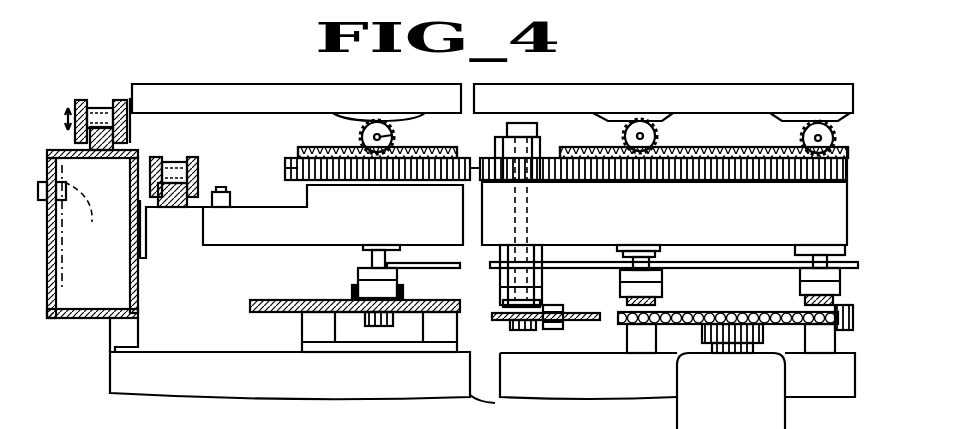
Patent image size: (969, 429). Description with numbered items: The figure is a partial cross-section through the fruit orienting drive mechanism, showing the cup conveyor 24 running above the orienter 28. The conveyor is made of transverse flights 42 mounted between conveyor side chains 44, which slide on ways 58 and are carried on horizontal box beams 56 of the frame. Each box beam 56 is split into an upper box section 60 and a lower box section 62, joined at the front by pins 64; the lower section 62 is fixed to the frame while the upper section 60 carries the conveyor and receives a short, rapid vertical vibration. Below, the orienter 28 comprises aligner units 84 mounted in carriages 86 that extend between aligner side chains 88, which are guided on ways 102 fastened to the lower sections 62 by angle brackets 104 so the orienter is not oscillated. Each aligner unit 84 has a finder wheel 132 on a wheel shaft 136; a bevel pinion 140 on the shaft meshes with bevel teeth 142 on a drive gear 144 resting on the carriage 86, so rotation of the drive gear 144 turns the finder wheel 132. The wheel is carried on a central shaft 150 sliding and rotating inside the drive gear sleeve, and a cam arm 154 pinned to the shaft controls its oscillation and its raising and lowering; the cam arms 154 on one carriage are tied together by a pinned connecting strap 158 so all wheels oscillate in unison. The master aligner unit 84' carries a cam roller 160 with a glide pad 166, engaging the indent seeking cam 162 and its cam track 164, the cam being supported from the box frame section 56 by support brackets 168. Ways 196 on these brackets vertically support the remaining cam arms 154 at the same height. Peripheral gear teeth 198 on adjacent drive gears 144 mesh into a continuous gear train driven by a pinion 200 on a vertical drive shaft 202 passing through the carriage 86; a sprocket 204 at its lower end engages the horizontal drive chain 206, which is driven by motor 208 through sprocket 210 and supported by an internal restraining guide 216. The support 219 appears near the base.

The cup conveyor 24 is at (742, 66).
The orienter 28 is at (237, 284).
The transverse flight 42 is at (485, 90).
The conveyor side chain 44 is at (100, 112).
The box beam 56 is at (76, 319).
The way 58 is at (88, 151).
The upper box section 60 is at (134, 162).
The lower box section 62 is at (138, 306).
The pin 64 is at (80, 227).
The aligner unit 84 is at (704, 123).
The master aligner unit 84' is at (339, 138).
The carriage 86 is at (630, 224).
The aligner side chain 88 is at (180, 170).
The way 102 is at (145, 207).
The angle bracket 104 is at (147, 250).
The finder wheel 132 is at (358, 131).
The wheel shaft 136 is at (397, 132).
The bevel pinion 140 is at (348, 170).
The bevel teeth 142 is at (400, 160).
The drive gear 144 is at (462, 182).
The central shaft 150 is at (372, 256).
The cam arm 154 is at (365, 272).
The connecting strap 158 is at (431, 270).
The cam roller 160 is at (365, 318).
The indent seeking cam 162 is at (252, 305).
The cam track 164 is at (382, 327).
The glide pad 166 is at (352, 292).
The support bracket 168 is at (560, 393).
The way 196 is at (628, 301).
The peripheral gear teeth 198 is at (302, 178).
The pinion 200 is at (537, 182).
The vertical drive shaft 202 is at (531, 213).
The sprocket 204 is at (500, 316).
The horizontal drive chain 206 is at (552, 331).
The motor 208 is at (745, 405).
The sprocket 210 is at (808, 328).
The internal restraining guide 216 is at (570, 326).
The support 219 is at (441, 412).